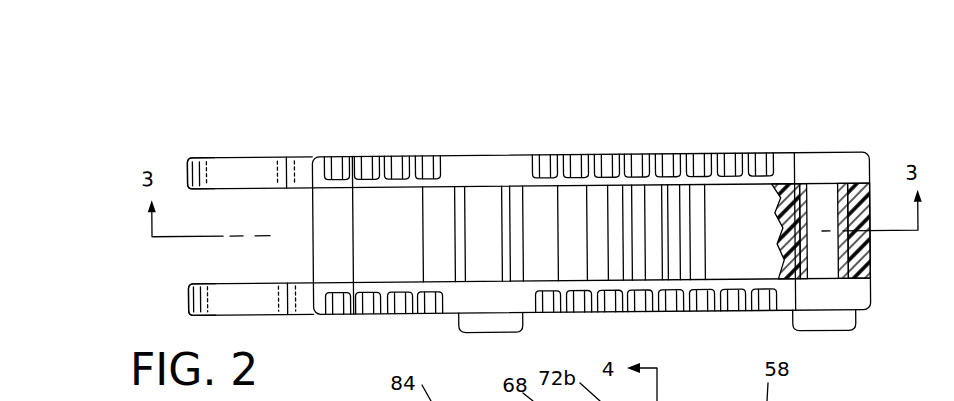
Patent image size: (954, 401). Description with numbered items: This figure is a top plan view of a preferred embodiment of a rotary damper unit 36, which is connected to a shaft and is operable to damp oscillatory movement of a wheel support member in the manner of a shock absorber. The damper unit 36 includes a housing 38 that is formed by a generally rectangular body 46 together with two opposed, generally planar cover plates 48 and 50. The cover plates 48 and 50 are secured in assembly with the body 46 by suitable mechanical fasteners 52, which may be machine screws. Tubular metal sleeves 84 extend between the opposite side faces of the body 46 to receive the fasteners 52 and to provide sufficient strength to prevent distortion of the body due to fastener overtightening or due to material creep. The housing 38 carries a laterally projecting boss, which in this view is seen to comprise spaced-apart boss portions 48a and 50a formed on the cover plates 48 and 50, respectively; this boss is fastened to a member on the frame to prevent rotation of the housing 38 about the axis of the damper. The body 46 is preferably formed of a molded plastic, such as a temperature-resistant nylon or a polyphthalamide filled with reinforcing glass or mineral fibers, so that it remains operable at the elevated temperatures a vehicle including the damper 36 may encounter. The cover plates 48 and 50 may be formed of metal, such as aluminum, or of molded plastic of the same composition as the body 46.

The rotary damper unit 36 is at (529, 126).
The housing 38 is at (575, 202).
The body 46 is at (863, 257).
The cover plate 48 is at (705, 156).
The boss portion 48a is at (189, 156).
The cover plate 50 is at (673, 306).
The boss portion 50a is at (188, 297).
The mechanical fasteners 52 is at (516, 332).
The tubular metal sleeves 84 is at (848, 204).